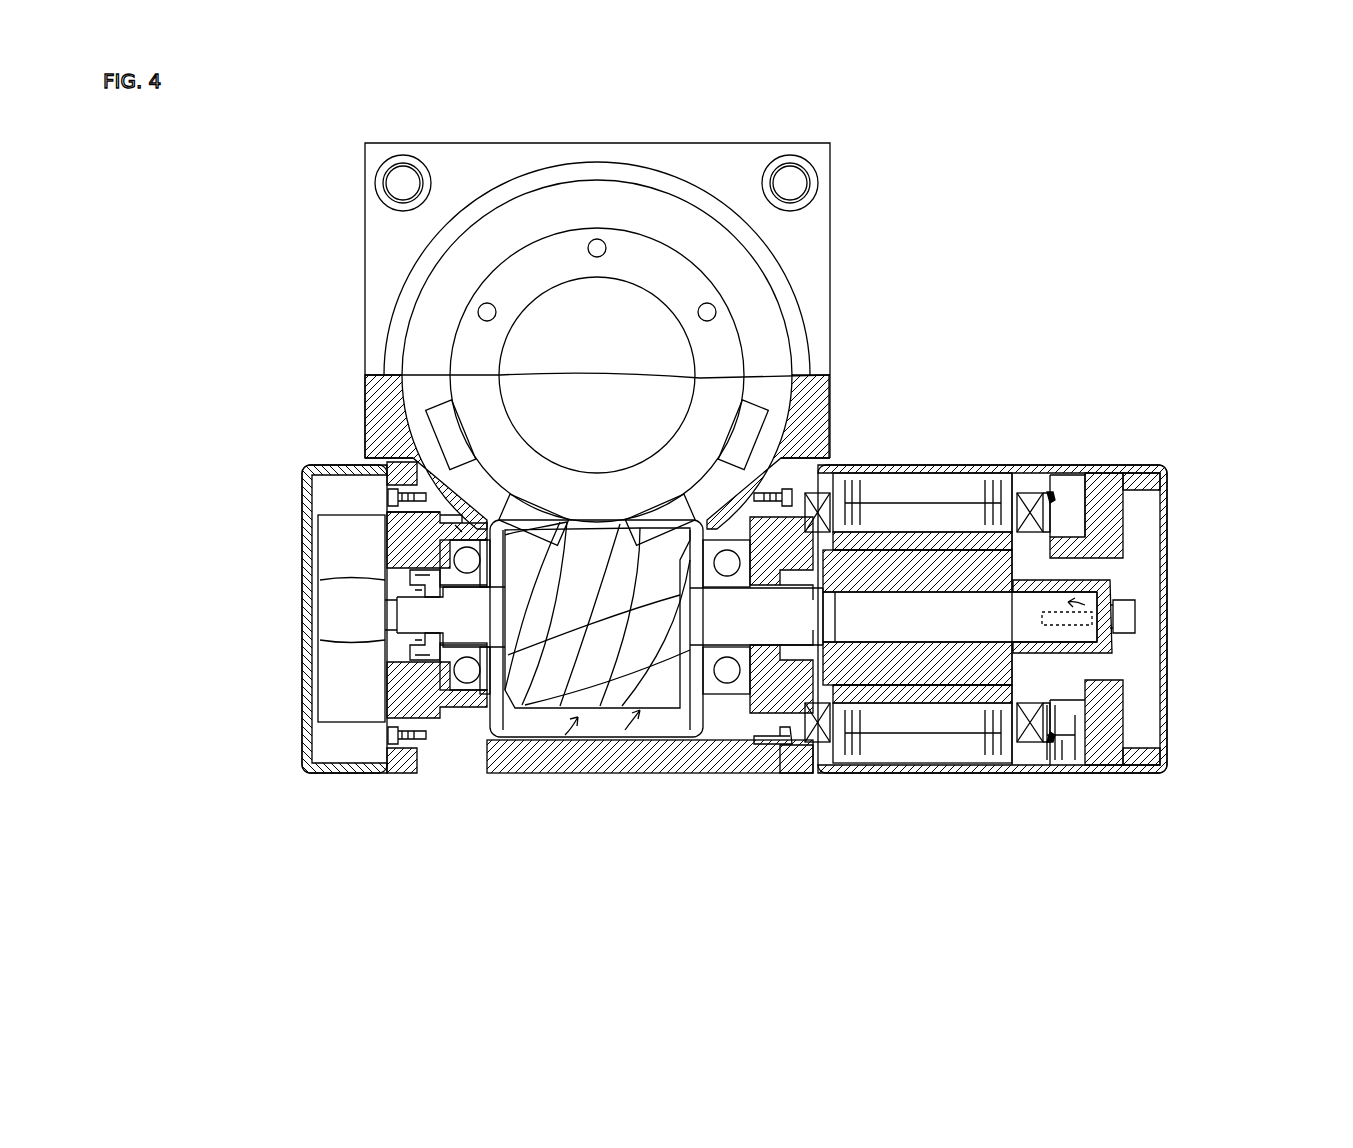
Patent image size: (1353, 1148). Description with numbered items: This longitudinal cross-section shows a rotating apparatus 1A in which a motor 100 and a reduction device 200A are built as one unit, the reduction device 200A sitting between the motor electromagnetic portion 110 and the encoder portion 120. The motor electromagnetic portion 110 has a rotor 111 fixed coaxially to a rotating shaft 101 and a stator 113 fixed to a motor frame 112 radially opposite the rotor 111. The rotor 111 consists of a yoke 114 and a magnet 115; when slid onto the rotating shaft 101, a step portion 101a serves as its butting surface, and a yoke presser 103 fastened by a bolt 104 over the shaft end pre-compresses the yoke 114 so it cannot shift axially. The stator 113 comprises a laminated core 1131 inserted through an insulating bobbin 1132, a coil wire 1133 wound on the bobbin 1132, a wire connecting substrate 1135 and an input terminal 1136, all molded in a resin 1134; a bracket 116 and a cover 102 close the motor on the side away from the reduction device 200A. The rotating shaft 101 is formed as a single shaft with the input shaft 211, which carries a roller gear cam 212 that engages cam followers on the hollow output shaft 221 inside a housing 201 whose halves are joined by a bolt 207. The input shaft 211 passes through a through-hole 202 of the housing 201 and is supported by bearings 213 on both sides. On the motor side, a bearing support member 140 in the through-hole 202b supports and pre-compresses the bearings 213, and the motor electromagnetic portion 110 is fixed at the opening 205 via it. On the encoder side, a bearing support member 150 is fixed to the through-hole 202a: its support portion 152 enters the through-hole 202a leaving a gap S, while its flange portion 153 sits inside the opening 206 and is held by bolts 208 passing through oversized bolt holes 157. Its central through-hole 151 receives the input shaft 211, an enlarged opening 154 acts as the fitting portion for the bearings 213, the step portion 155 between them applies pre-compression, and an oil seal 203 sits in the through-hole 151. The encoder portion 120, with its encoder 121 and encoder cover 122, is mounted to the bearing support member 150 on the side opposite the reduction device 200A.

The rotating apparatus 1A is at (1238, 124).
The reduction device 200A is at (865, 158).
The motor 100 is at (1240, 453).
The housing 201 is at (363, 196).
The bolt 207 is at (403, 182).
The output shaft 221 is at (553, 262).
The through-hole 202 is at (570, 765).
The through-hole 202a is at (385, 528).
The through-hole 202b is at (692, 770).
The roller gear cam 212 is at (622, 770).
The encoder cover 122 is at (300, 664).
The encoder 121 is at (335, 562).
The flange portion 153 is at (400, 765).
The support portion 152 is at (448, 765).
The bearing support member 150 is at (480, 828).
The bolt hole 157 is at (385, 738).
The opening 206 is at (335, 470).
The bolt 208 is at (386, 734).
The through-hole 151 is at (410, 578).
The step portion 155 is at (410, 660).
The oil seal 203 is at (387, 652).
The opening 154 is at (482, 523).
The gap S is at (458, 528).
The bearings 213 is at (500, 765).
The input shaft 211 is at (800, 765).
The opening 205 is at (835, 463).
The bearing support member 140 is at (792, 770).
The cover 102 is at (1168, 754).
The bracket 116 is at (1104, 472).
The input terminal 1136 is at (1075, 765).
The wire connecting substrate 1135 is at (1057, 765).
The stator 113 is at (1100, 305).
The laminated core 1131 is at (948, 500).
The bobbin 1132 is at (1022, 485).
The coil wire 1133 is at (1030, 490).
The resin 1134 is at (1072, 470).
The yoke 114 is at (962, 690).
The magnet 115 is at (888, 690).
The rotor 111 is at (982, 815).
The motor frame 112 is at (1020, 770).
The rotating shaft 101 is at (1110, 583).
The step portion 101a is at (840, 768).
The yoke presser 103 is at (1112, 652).
The bolt 104 is at (1136, 618).
The motor electromagnetic portion 110 is at (820, 893).
The encoder portion 120 is at (390, 893).